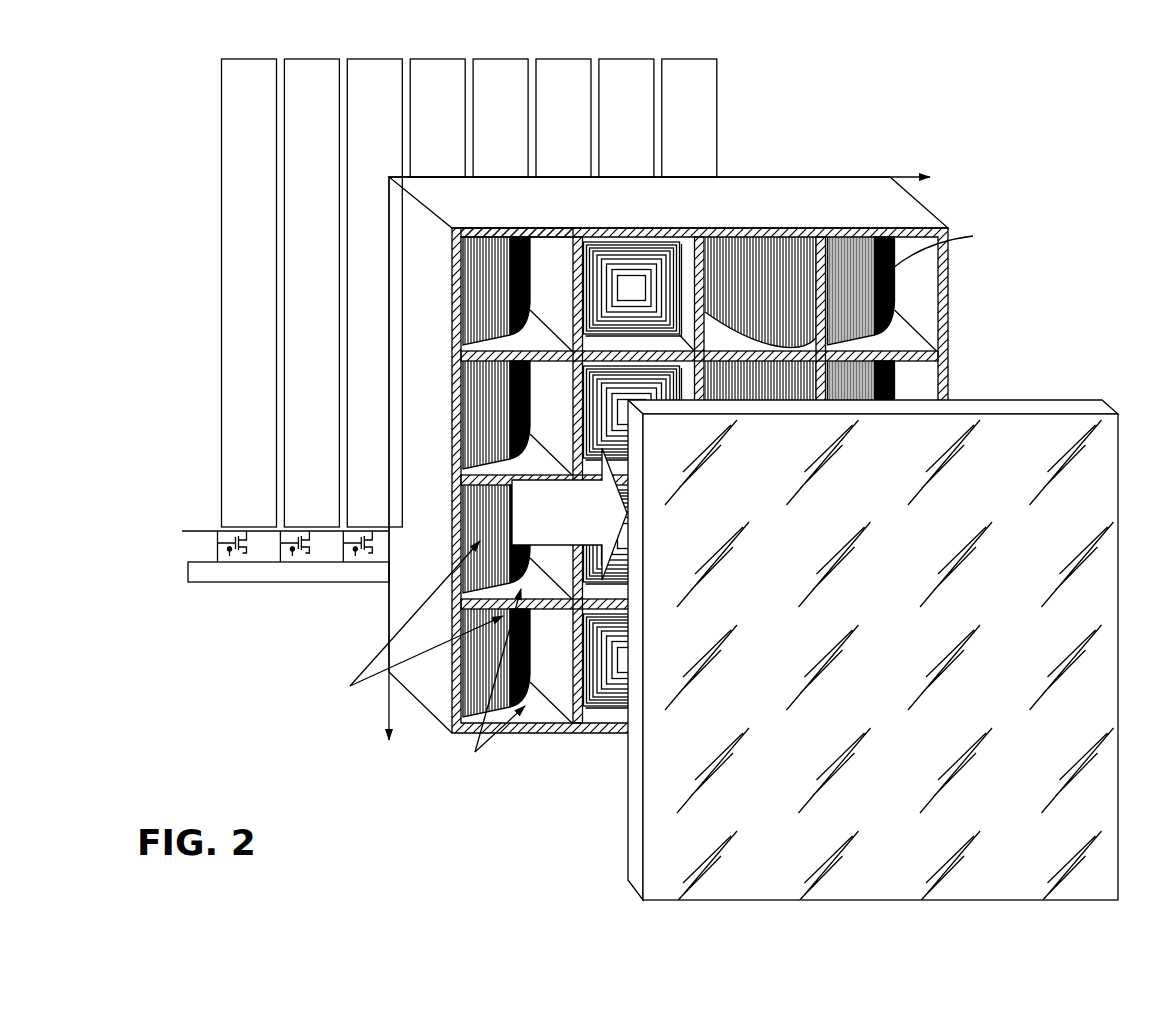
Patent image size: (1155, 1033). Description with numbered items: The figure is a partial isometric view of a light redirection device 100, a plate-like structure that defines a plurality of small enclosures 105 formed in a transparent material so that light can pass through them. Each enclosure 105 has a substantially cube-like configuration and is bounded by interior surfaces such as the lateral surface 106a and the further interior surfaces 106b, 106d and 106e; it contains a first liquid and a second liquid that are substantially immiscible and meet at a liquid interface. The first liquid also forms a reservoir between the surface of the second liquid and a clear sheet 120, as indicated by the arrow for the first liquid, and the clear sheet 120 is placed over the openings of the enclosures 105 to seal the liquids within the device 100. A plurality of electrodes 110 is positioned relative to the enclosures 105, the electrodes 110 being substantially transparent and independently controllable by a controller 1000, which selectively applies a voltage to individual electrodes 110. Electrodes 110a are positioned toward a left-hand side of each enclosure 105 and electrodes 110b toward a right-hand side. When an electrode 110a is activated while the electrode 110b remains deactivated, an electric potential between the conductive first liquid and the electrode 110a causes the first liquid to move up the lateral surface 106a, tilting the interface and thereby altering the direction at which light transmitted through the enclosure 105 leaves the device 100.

The light redirection device 100 is at (1088, 227).
The enclosure 105 is at (694, 226).
The lateral surface 106a is at (478, 288).
The interior surface 106b is at (570, 258).
The interior surface 106d is at (525, 347).
The interior surface 106e is at (540, 233).
The electrodes 110 is at (437, 274).
The left-hand electrode 110a is at (243, 59).
The right-hand electrode 110b is at (311, 59).
The clear sheet 120 is at (1060, 404).
The controller 1000 is at (206, 585).